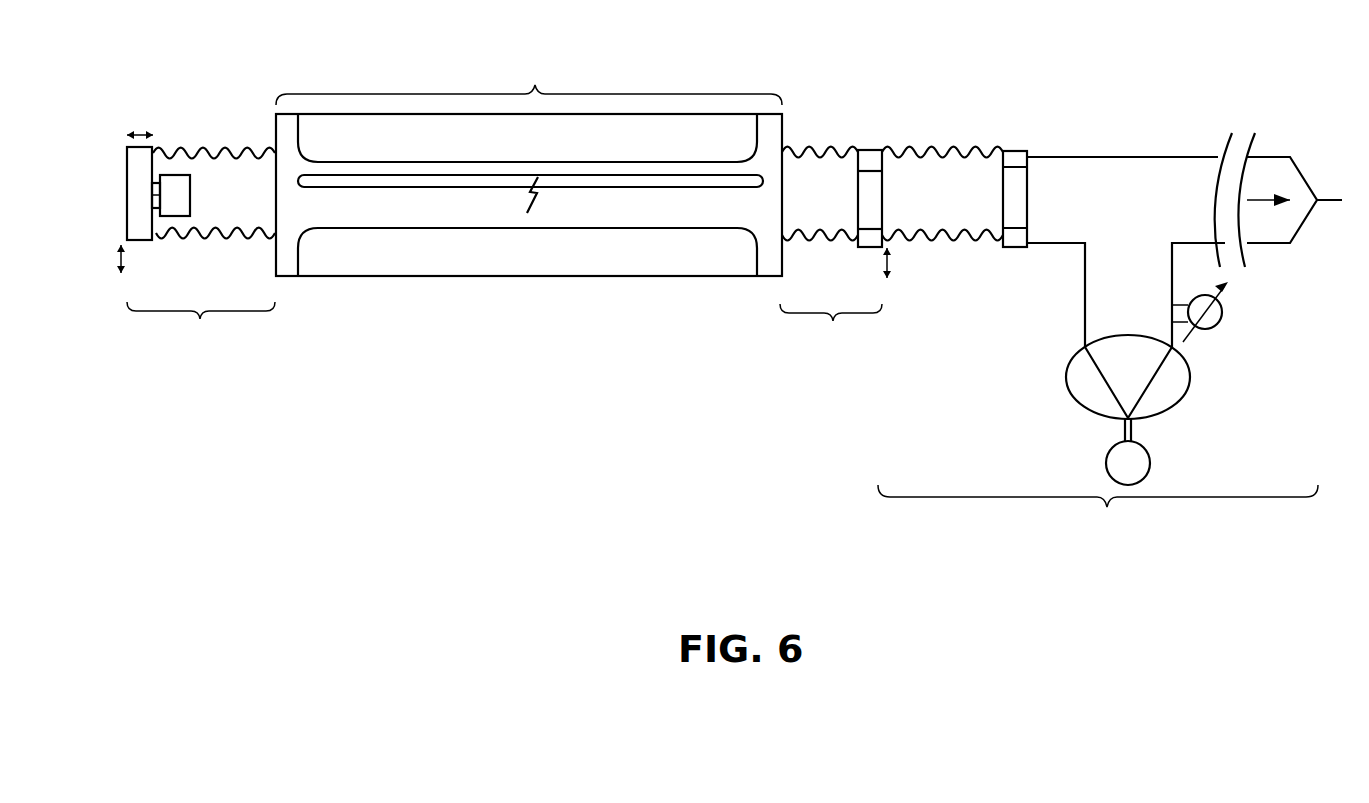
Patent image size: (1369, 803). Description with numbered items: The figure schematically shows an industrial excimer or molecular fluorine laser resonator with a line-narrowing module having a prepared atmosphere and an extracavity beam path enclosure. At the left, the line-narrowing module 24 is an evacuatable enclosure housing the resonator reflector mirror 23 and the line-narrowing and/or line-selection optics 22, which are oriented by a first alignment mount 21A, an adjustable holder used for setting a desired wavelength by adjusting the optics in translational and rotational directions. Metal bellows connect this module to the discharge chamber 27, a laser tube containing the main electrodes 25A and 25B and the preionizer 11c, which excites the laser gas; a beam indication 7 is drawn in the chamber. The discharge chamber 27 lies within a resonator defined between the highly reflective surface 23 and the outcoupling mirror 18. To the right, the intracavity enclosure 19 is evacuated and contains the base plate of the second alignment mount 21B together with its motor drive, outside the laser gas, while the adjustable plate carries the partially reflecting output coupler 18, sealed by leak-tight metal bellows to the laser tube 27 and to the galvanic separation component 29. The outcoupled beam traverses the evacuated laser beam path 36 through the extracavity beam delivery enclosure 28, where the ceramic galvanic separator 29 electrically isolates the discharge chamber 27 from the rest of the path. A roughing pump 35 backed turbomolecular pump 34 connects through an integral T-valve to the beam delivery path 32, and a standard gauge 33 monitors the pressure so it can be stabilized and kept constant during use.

The laser beam 7 is at (532, 195).
The preionizer 11c is at (692, 190).
The output coupler 18 is at (872, 222).
The intracavity enclosure 19 is at (831, 331).
The first alignment mount 21A is at (127, 187).
The second alignment mount 21B is at (883, 185).
The line-narrowing and/or line-selection optics 22 is at (177, 217).
The resonator reflector mirror 23 is at (153, 221).
The line-narrowing module 24 is at (201, 328).
The main electrode 25A is at (516, 151).
The main electrode 25B is at (516, 264).
The discharge chamber 27 is at (529, 164).
The extracavity beam delivery enclosure 28 is at (973, 148).
The galvanic separation component 29 is at (1022, 152).
The beam delivery path 32 is at (1328, 200).
The gauge 33 is at (1222, 309).
The turbomolecular pump 34 is at (1178, 378).
The roughing pump 35 is at (1150, 462).
The evacuated laser beam path 36 is at (1098, 516).